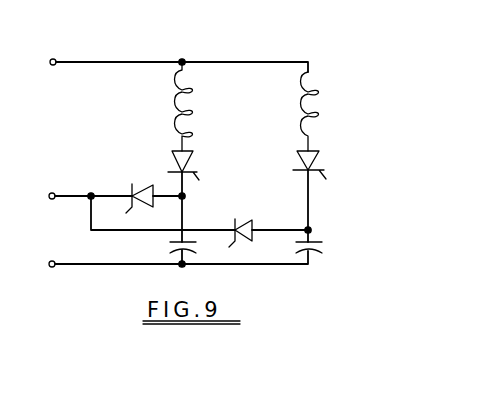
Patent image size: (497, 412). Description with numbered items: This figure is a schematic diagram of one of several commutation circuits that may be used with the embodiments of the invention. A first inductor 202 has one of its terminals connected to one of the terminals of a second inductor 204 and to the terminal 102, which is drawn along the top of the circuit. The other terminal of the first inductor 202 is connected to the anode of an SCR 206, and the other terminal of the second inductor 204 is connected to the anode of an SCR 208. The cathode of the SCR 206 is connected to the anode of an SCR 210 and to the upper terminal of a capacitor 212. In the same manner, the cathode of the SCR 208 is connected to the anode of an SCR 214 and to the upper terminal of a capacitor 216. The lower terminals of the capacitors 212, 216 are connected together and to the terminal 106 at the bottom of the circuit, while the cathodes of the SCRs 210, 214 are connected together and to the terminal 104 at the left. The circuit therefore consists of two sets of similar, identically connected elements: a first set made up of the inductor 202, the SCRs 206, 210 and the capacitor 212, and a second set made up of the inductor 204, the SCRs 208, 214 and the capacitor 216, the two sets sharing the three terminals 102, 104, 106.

The terminal 102 is at (54, 58).
The terminal 104 is at (52, 192).
The terminal 106 is at (51, 268).
The first inductor 202 is at (190, 103).
The second inductor 204 is at (315, 106).
The SCR 206 is at (190, 153).
The SCR 208 is at (318, 161).
The SCR 210 is at (149, 189).
The capacitor 212 is at (170, 248).
The SCR 214 is at (237, 222).
The capacitor 216 is at (332, 250).